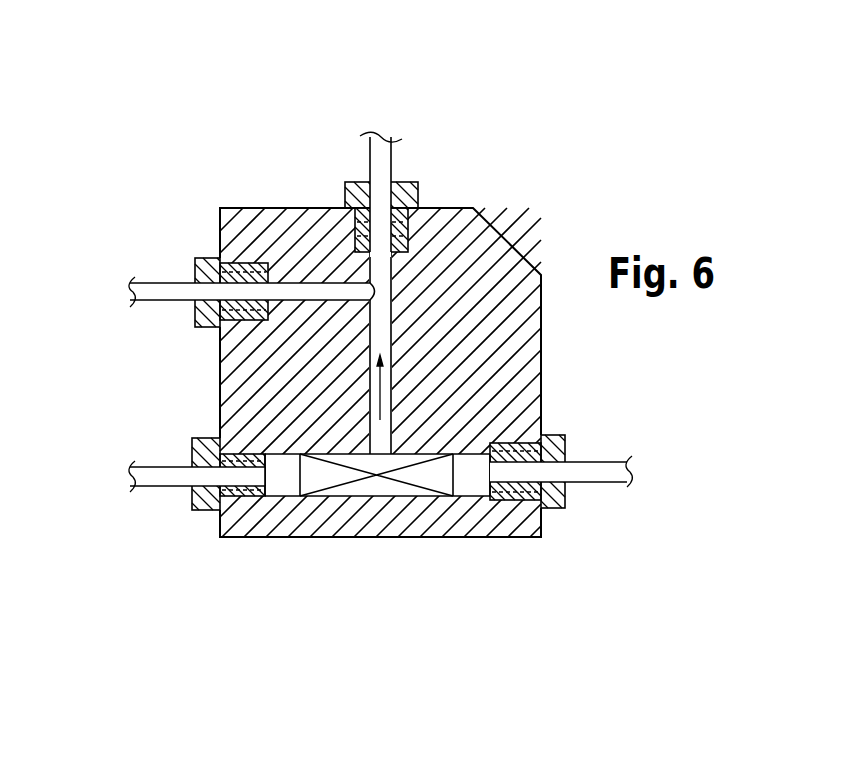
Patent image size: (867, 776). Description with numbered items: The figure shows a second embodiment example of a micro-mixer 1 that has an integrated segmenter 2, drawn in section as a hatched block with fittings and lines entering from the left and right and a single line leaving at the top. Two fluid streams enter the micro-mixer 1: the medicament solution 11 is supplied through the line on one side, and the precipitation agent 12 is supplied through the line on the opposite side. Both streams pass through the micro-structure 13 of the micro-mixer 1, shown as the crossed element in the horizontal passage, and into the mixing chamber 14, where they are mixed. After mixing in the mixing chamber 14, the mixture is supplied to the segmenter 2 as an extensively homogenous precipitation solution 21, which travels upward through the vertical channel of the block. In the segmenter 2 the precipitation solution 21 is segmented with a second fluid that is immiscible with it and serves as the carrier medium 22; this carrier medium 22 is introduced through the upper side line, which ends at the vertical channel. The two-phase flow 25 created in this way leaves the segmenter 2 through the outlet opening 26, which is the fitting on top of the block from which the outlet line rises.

The micro-mixer 1 is at (381, 354).
The segmenter 2 is at (269, 186).
The medicament solution 11 is at (110, 477).
The precipitation agent 12 is at (725, 470).
The micro-structure 13 is at (390, 484).
The mixing chamber 14 is at (378, 442).
The precipitation solution 21 is at (380, 393).
The carrier medium 22 is at (110, 293).
The two-phase flow 25 is at (382, 58).
The outlet opening 26 is at (380, 195).